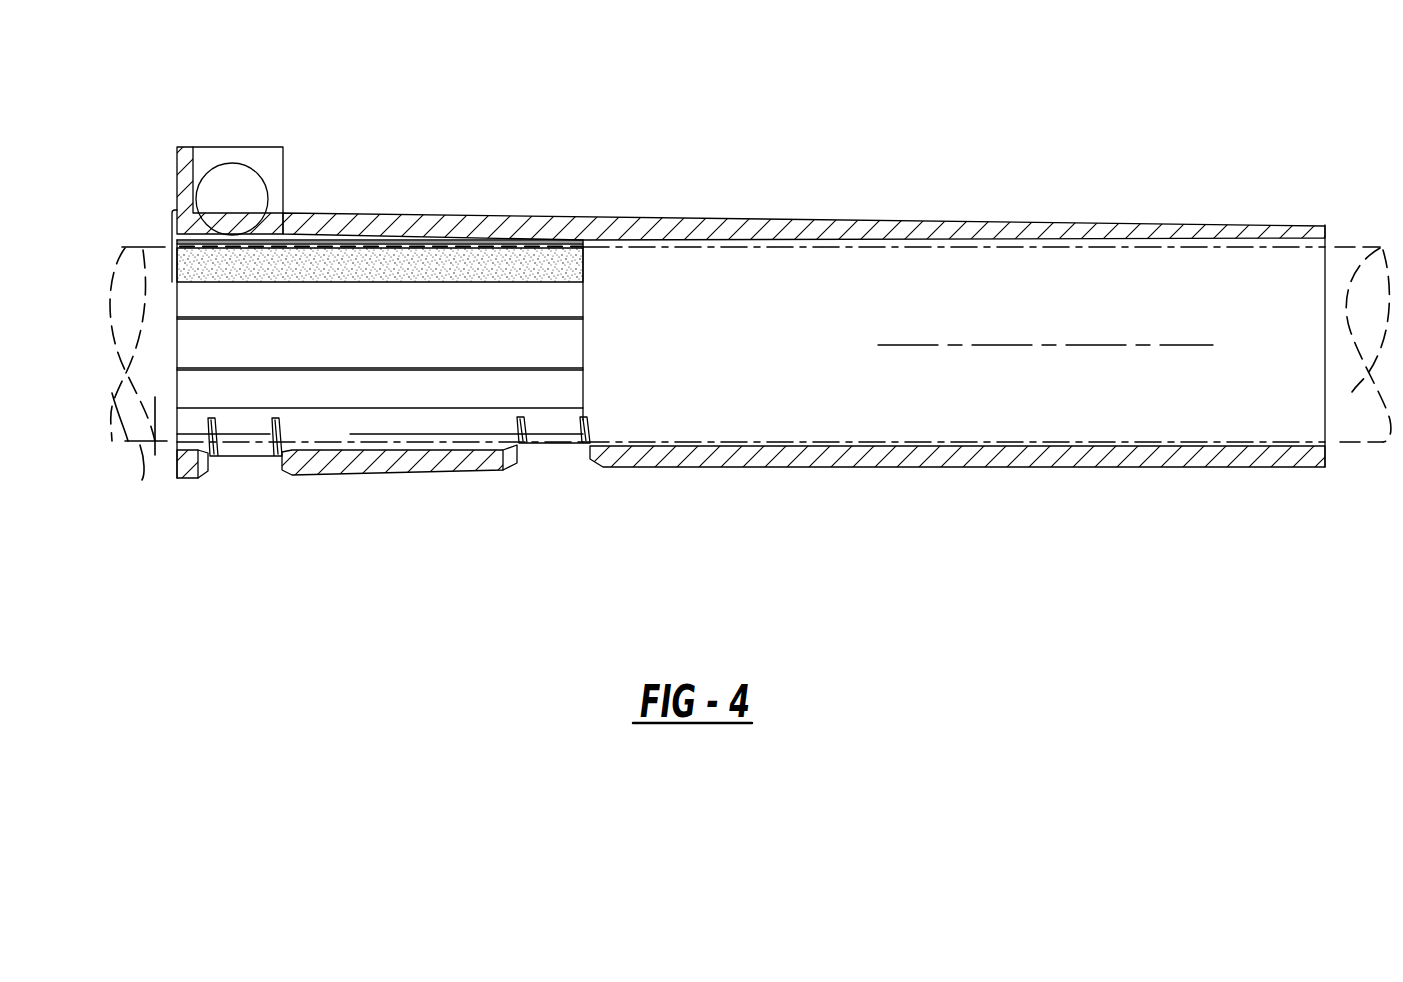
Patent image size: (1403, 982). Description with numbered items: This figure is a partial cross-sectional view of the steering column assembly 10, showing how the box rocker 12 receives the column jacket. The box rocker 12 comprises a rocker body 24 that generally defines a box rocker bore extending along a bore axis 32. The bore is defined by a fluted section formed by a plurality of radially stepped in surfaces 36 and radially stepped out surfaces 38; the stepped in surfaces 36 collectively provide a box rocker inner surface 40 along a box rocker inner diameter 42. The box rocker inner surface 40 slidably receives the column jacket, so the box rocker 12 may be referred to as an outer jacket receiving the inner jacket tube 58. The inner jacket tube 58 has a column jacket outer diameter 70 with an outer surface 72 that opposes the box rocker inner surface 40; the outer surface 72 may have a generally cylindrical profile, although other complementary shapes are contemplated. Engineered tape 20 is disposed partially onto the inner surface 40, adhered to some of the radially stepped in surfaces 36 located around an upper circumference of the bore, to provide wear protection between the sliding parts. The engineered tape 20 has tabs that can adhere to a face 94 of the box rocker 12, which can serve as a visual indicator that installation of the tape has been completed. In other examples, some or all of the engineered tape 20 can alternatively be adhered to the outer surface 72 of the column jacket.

The steering column assembly 10 is at (893, 494).
The box rocker 12 is at (1115, 489).
The engineered tape 20 is at (568, 268).
The rocker body 24 is at (408, 462).
The bore axis 32 is at (1045, 381).
The radially stepped in surfaces 36 is at (562, 391).
The radially stepped out surfaces 38 is at (463, 238).
The box rocker inner surface 40 is at (418, 250).
The box rocker inner diameter 42 is at (287, 252).
The inner jacket tube 58 is at (160, 441).
The column jacket outer diameter 70 is at (145, 243).
The outer surface 72 is at (140, 480).
The face 94 is at (177, 168).